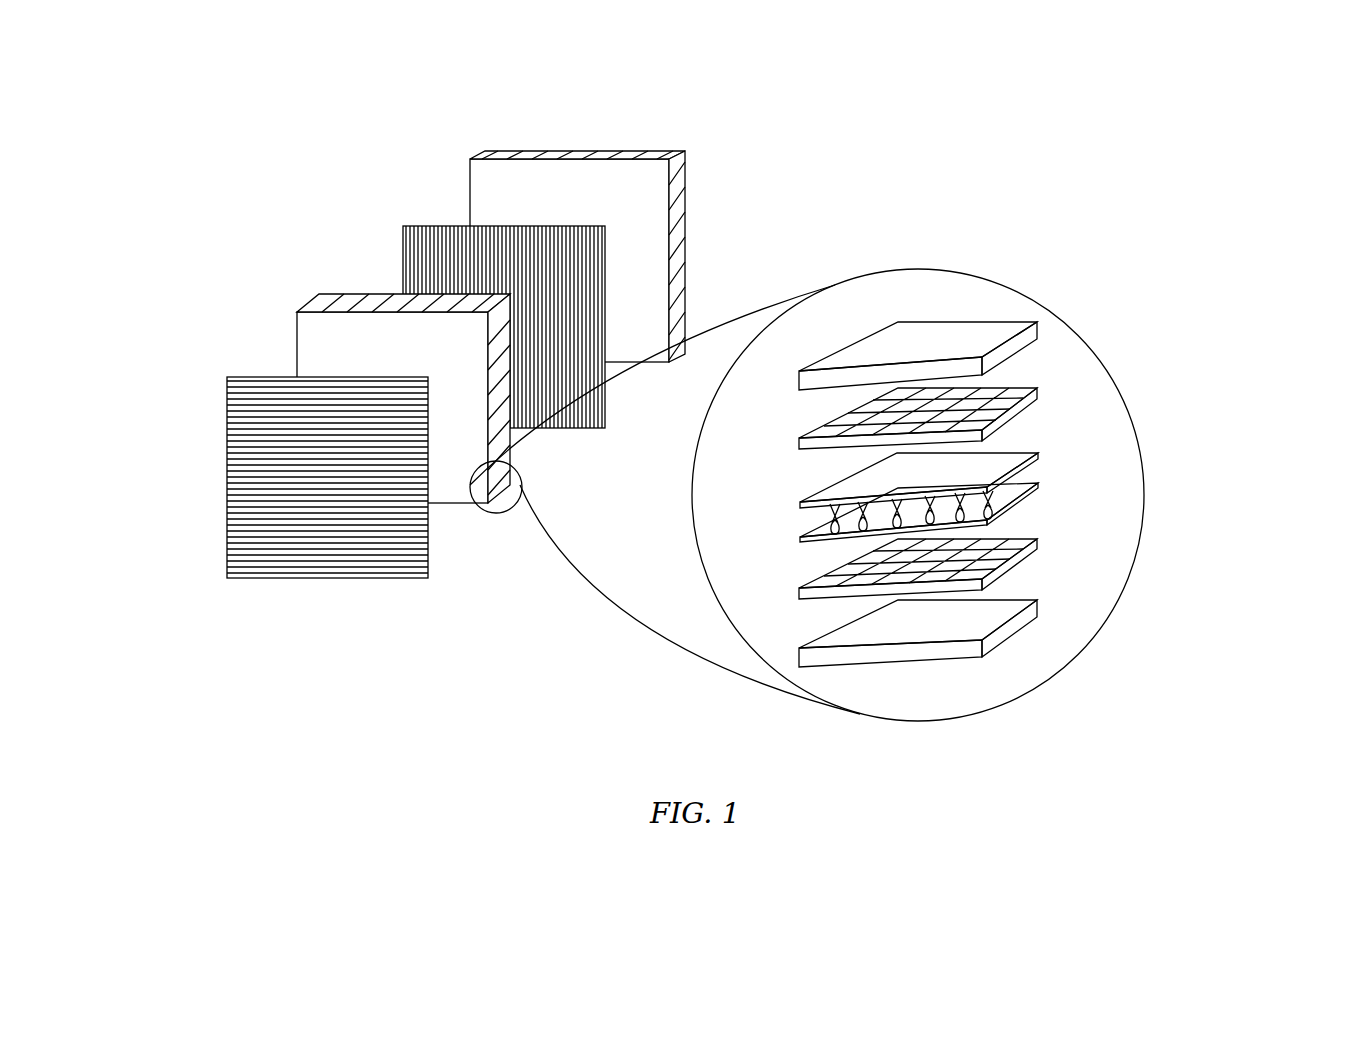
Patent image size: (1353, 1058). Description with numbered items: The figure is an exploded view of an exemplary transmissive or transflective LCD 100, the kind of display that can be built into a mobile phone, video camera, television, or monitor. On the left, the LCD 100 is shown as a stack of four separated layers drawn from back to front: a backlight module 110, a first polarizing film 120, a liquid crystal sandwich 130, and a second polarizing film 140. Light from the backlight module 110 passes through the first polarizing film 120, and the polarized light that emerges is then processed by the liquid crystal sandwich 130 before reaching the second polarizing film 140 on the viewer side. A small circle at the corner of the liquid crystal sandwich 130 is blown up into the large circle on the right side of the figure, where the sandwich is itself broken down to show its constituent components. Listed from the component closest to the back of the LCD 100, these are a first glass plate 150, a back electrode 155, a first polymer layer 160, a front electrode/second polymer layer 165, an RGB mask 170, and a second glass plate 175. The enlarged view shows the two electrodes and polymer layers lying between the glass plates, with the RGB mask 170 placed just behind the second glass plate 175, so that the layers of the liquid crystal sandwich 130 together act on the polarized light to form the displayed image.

The LCD 100 is at (375, 409).
The backlight module 110 is at (508, 149).
The first polarizing film 120 is at (413, 224).
The liquid crystal sandwich 130 is at (358, 243).
The second polarizing film 140 is at (230, 375).
The first glass plate 150 is at (1036, 618).
The back electrode 155 is at (1035, 557).
The first polymer layer 160 is at (1037, 487).
The front electrode/second polymer layer 165 is at (1037, 460).
The RGB mask 170 is at (1035, 397).
The second glass plate 175 is at (1035, 322).